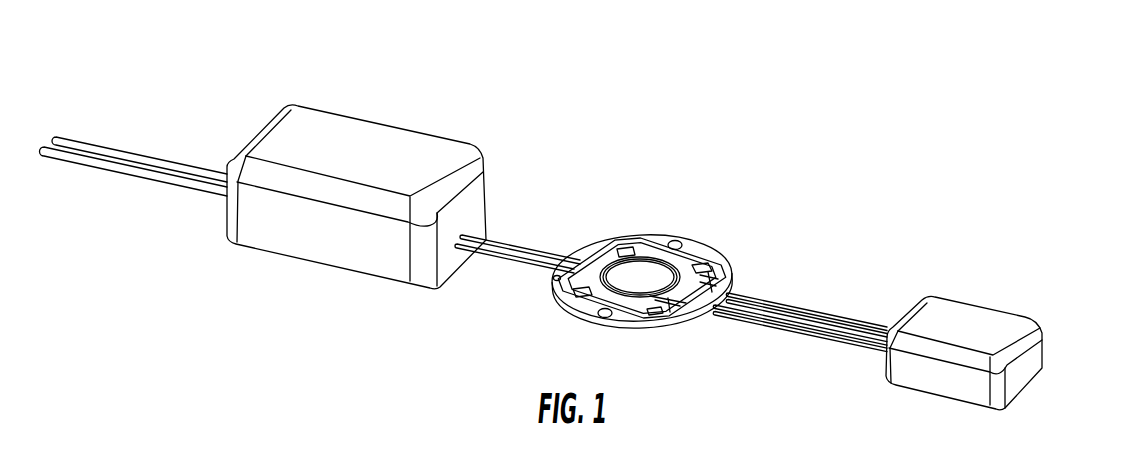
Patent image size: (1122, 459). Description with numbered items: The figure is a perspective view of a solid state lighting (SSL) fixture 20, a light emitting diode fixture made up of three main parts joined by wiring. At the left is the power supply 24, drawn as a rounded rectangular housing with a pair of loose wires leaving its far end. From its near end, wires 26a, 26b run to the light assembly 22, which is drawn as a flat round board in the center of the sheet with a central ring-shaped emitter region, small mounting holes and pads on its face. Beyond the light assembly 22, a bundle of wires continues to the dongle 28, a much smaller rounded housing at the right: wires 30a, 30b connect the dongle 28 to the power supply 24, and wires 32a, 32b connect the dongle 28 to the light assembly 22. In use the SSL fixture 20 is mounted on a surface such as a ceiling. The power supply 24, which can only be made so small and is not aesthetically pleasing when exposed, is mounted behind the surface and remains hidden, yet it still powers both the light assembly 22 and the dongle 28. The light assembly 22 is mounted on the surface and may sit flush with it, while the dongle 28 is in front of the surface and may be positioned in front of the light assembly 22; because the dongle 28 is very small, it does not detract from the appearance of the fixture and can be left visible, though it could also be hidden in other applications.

The solid state lighting fixture 20 is at (575, 237).
The light assembly 22 is at (644, 226).
The power supply 24 is at (413, 130).
The wire 26a is at (520, 248).
The wire 26b is at (493, 257).
The dongle 28 is at (987, 307).
The wire 30a is at (783, 300).
The wire 30b is at (762, 320).
The wire 32a is at (809, 330).
The wire 32b is at (807, 338).